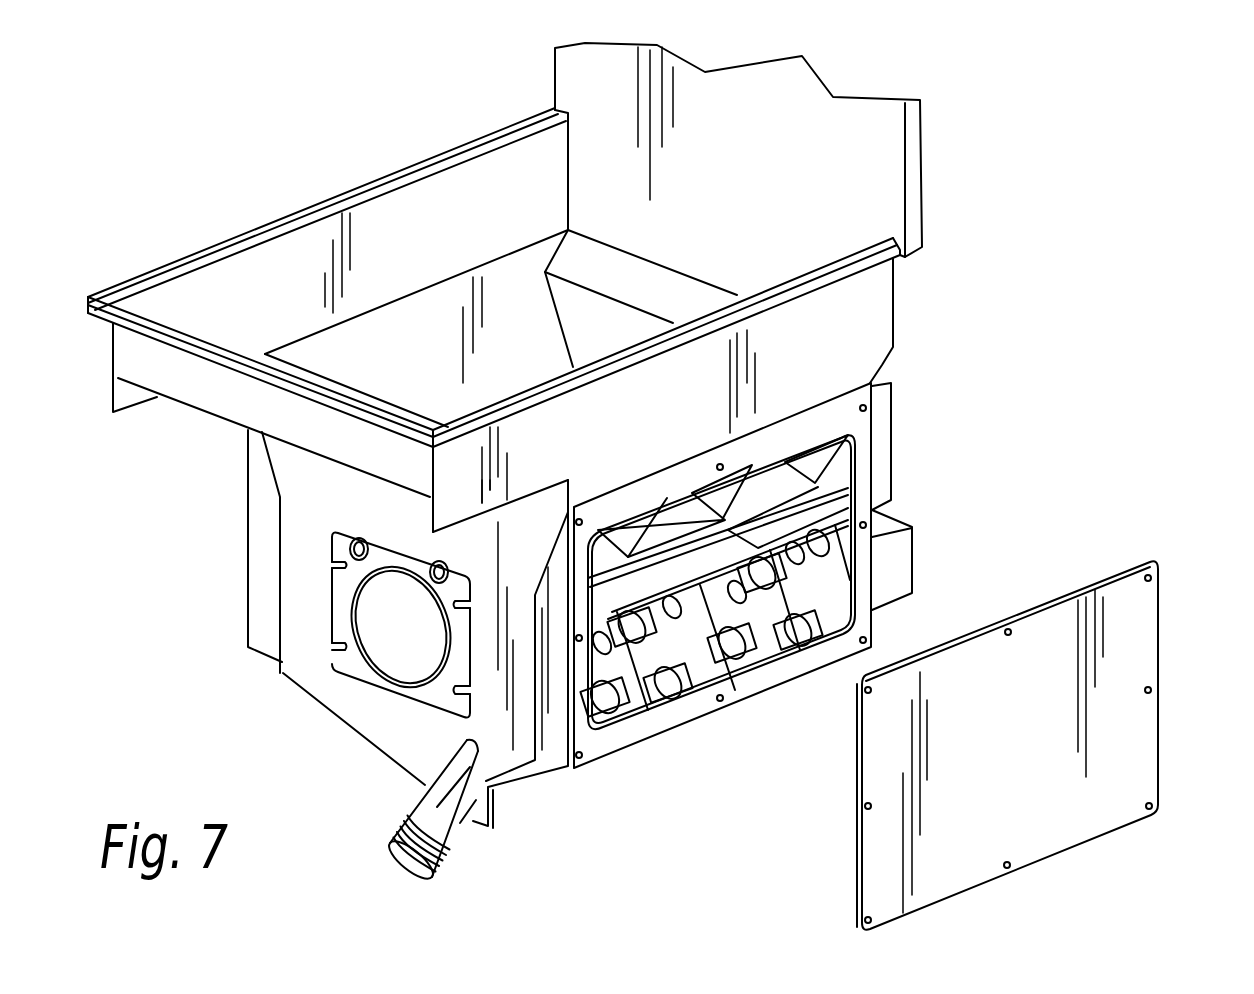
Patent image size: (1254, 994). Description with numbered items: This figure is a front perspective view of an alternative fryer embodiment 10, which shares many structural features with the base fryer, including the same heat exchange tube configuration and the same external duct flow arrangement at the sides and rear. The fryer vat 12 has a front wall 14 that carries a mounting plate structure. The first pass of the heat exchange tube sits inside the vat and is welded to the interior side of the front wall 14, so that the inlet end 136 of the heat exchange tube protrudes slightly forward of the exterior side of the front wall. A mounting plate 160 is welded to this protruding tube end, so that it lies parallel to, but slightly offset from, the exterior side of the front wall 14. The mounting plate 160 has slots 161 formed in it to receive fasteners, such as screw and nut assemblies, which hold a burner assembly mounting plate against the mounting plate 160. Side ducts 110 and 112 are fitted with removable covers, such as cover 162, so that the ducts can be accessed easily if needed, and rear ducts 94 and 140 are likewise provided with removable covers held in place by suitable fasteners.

The fryer 10 is at (390, 118).
The fryer vat 12 is at (378, 292).
The front wall 14 is at (300, 473).
The rear duct 94 is at (890, 527).
The side duct 110 is at (263, 538).
The side duct 112 is at (865, 575).
The inlet end of the heat exchange tube 136 is at (383, 672).
The rear duct 140 is at (888, 442).
The mounting plate 160 is at (353, 663).
The slots 161 is at (332, 565).
The cover 162 is at (1130, 658).